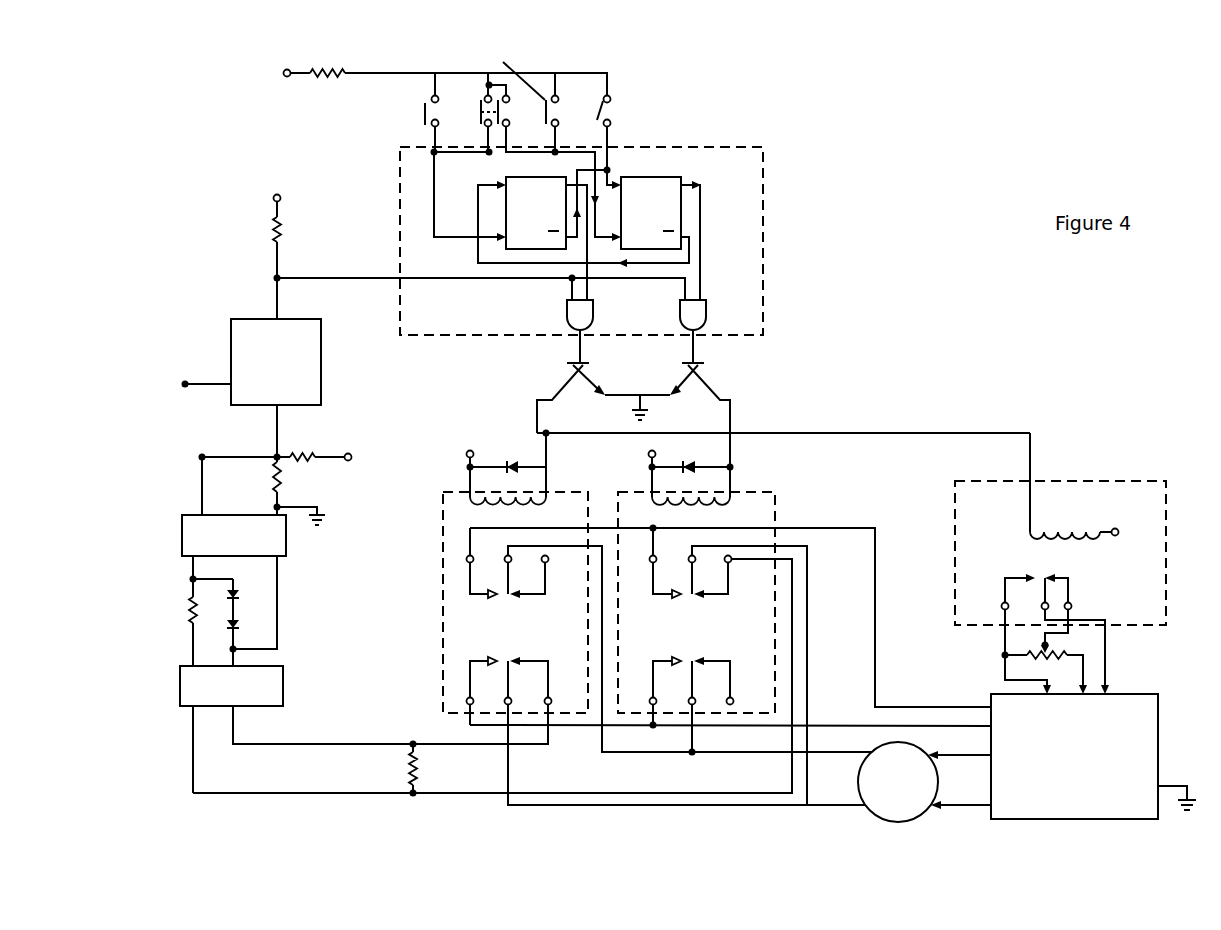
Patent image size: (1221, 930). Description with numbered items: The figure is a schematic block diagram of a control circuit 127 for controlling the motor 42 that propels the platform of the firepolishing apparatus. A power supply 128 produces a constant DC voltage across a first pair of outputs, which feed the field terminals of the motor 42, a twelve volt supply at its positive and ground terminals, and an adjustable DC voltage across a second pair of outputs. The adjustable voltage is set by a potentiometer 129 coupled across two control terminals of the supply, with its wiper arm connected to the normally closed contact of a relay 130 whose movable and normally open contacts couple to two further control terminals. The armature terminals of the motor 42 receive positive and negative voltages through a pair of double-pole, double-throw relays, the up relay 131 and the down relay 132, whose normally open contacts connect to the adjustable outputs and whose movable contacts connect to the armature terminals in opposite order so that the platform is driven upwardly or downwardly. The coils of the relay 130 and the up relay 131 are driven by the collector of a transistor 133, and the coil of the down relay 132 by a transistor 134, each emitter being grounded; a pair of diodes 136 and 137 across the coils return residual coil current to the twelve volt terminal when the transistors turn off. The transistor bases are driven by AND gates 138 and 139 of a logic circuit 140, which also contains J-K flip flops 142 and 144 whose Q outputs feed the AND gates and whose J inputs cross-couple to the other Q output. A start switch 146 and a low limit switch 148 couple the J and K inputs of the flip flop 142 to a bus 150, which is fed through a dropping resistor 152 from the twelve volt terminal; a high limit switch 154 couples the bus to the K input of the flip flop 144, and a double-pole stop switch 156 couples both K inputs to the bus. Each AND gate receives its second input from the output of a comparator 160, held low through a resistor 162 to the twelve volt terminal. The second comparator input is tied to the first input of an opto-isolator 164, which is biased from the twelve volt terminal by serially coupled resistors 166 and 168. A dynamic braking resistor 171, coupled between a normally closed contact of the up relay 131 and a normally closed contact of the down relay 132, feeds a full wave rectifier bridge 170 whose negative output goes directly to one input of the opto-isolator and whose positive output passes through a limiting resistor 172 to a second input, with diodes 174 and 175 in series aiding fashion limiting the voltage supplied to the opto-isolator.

The control circuit 127 is at (931, 329).
The power supply 128 is at (1160, 718).
The potentiometer 129 is at (1033, 657).
The relay 130 is at (1060, 559).
The up relay 131 is at (642, 648).
The down relay 132 is at (500, 648).
The transistor 133 is at (563, 383).
The transistor 134 is at (710, 382).
The diode 136 is at (512, 458).
The diode 137 is at (693, 465).
The AND gate 138 is at (595, 307).
The AND gate 139 is at (708, 307).
The logic circuit 140 is at (520, 255).
The J-K flip flop 142 is at (681, 178).
The J-K flip flop 144 is at (506, 177).
The start switch 146 is at (597, 113).
The low limit switch 148 is at (489, 106).
The bus 150 is at (608, 73).
The dropping resistor 152 is at (336, 79).
The high limit switch 154 is at (423, 106).
The stop switch 156 is at (480, 110).
The comparator 160 is at (322, 363).
The resistor 162 is at (280, 236).
The opto-isolator 164 is at (287, 537).
The resistor 166 is at (300, 451).
The resistor 168 is at (279, 476).
The full wave rectifier bridge 170 is at (283, 678).
The dynamic braking resistor 171 is at (408, 768).
The limiting resistor 172 is at (188, 612).
The diode 174 is at (240, 593).
The diode 175 is at (240, 630).
The motor 42 is at (880, 778).